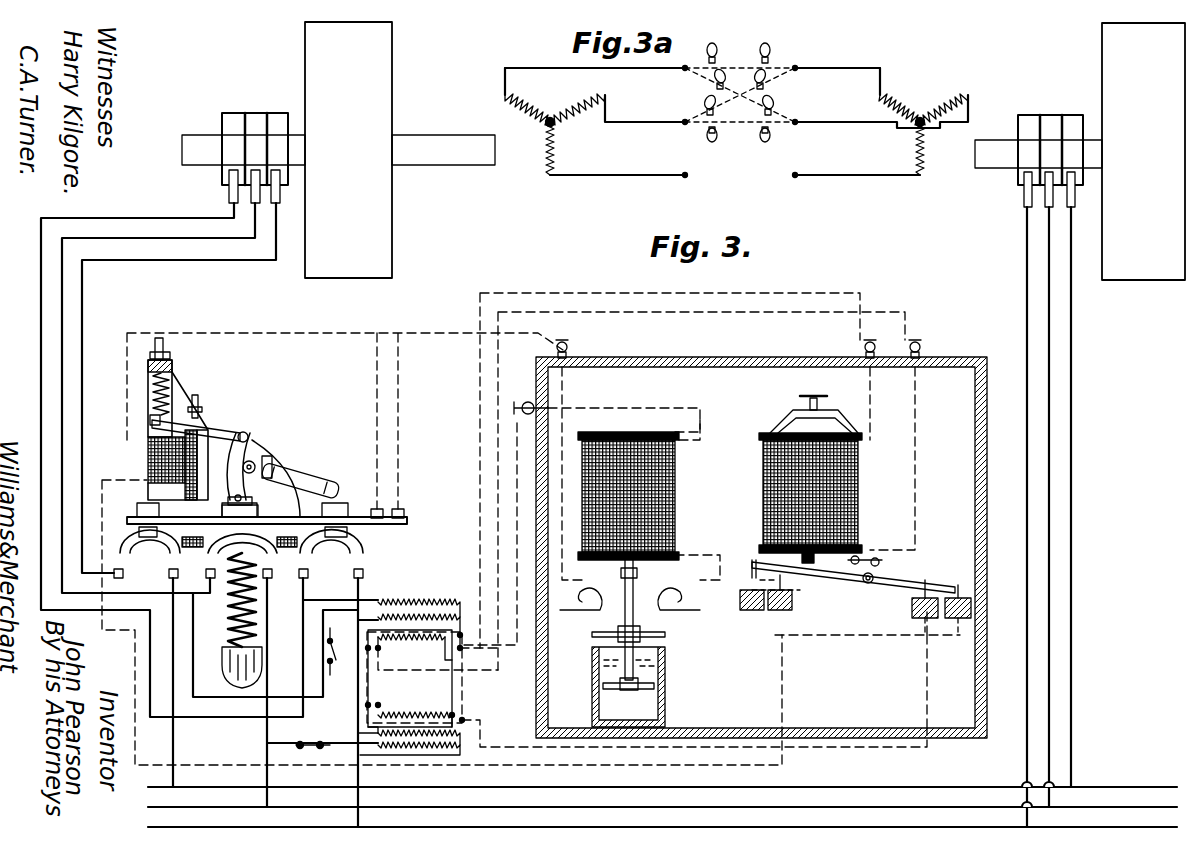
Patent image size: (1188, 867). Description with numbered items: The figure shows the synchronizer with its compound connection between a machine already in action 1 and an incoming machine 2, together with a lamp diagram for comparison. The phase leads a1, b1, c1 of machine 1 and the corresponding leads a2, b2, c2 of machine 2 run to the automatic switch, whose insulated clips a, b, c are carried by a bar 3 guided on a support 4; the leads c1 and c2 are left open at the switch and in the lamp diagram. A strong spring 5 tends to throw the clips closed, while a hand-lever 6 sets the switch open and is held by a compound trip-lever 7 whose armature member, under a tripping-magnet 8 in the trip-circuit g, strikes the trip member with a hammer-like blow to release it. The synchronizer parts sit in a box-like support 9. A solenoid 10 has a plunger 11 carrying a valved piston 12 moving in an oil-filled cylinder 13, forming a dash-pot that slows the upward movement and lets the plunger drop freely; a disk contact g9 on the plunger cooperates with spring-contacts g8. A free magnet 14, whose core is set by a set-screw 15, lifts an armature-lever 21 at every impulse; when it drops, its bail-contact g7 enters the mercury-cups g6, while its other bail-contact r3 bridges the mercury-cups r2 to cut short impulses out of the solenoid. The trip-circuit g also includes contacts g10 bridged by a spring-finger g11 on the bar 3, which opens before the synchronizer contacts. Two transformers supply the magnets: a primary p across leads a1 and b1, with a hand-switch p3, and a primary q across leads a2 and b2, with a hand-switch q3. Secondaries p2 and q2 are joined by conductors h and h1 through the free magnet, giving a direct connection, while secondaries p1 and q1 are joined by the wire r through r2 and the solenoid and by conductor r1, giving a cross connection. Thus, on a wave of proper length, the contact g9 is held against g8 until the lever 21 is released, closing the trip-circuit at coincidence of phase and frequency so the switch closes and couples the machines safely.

In FIG. 3A, the machine already in action 1 is at (923, 121).
In FIG. 3, the machine already in action 1 is at (1102, 80).
In FIG. 3A, the incoming machine 2 is at (555, 121).
In FIG. 3, the incoming machine 2 is at (305, 78).
In FIG. 3, the bar 3 is at (262, 517).
In FIG. 3, the bracket or support 4 is at (258, 448).
In FIG. 3, the spring 5 is at (230, 612).
In FIG. 3, the hand-lever 6 is at (283, 462).
In FIG. 3, the compound trip-lever 7 is at (218, 426).
In FIG. 3, the tripping-magnet 8 is at (148, 460).
In FIG. 3, the box-like support 9 is at (752, 357).
In FIG. 3, the solenoid 10 is at (676, 500).
In FIG. 3, the plunger 11 is at (634, 585).
In FIG. 3, the valved piston 12 is at (665, 697).
In FIG. 3, the cylinder 13 is at (592, 697).
In FIG. 3, the free magnet 14 is at (858, 503).
In FIG. 3, the set-screw 15 is at (820, 402).
In FIG. 3, the armature-lever 21 is at (880, 580).
In FIG. 3, the insulated clip a is at (357, 551).
In FIG. 3, the insulated clip b is at (239, 541).
In FIG. 3, the insulated clip c is at (132, 548).
In FIG. 3A, the phase lead a1 is at (818, 68).
In FIG. 3, the phase lead a1 is at (363, 574).
In FIG. 3A, the phase lead b1 is at (812, 122).
In FIG. 3, the phase lead b1 is at (268, 618).
In FIG. 3A, the phase lead c1 is at (824, 175).
In FIG. 3, the phase lead c1 is at (168, 576).
In FIG. 3A, the phase lead a2 is at (626, 69).
In FIG. 3, the phase lead a2 is at (232, 212).
In FIG. 3A, the phase lead b2 is at (625, 123).
In FIG. 3, the phase lead b2 is at (253, 230).
In FIG. 3A, the phase lead c2 is at (613, 176).
In FIG. 3, the phase lead c2 is at (274, 252).
In FIG. 3, the trip-circuit g is at (102, 480).
In FIG. 3, the mercury-cups g6 is at (775, 612).
In FIG. 3, the bail-contact g7 is at (785, 592).
In FIG. 3, the spring-contacts g8 is at (588, 604).
In FIG. 3, the disk contact g9 is at (592, 634).
In FIG. 3, the contacts g10 is at (398, 509).
In FIG. 3, the spring-finger contact g11 is at (408, 522).
In FIG. 3, the conductor h is at (480, 298).
In FIG. 3, the conductor h1 is at (367, 683).
In FIG. 3, the primary p is at (460, 748).
In FIG. 3, the secondary p1 is at (376, 723).
In FIG. 3, the secondary p2 is at (462, 717).
In FIG. 3, the hand-switch p3 is at (308, 742).
In FIG. 3, the primary q is at (422, 600).
In FIG. 3, the secondary q1 is at (378, 620).
In FIG. 3, the secondary q2 is at (418, 640).
In FIG. 3, the hand-switch q3 is at (328, 652).
In FIG. 3, the wire r is at (517, 632).
In FIG. 3, the conductor r1 is at (460, 683).
In FIG. 3, the mercury-cup contacts r2 is at (940, 640).
In FIG. 3, the bail-contact r3 is at (940, 596).